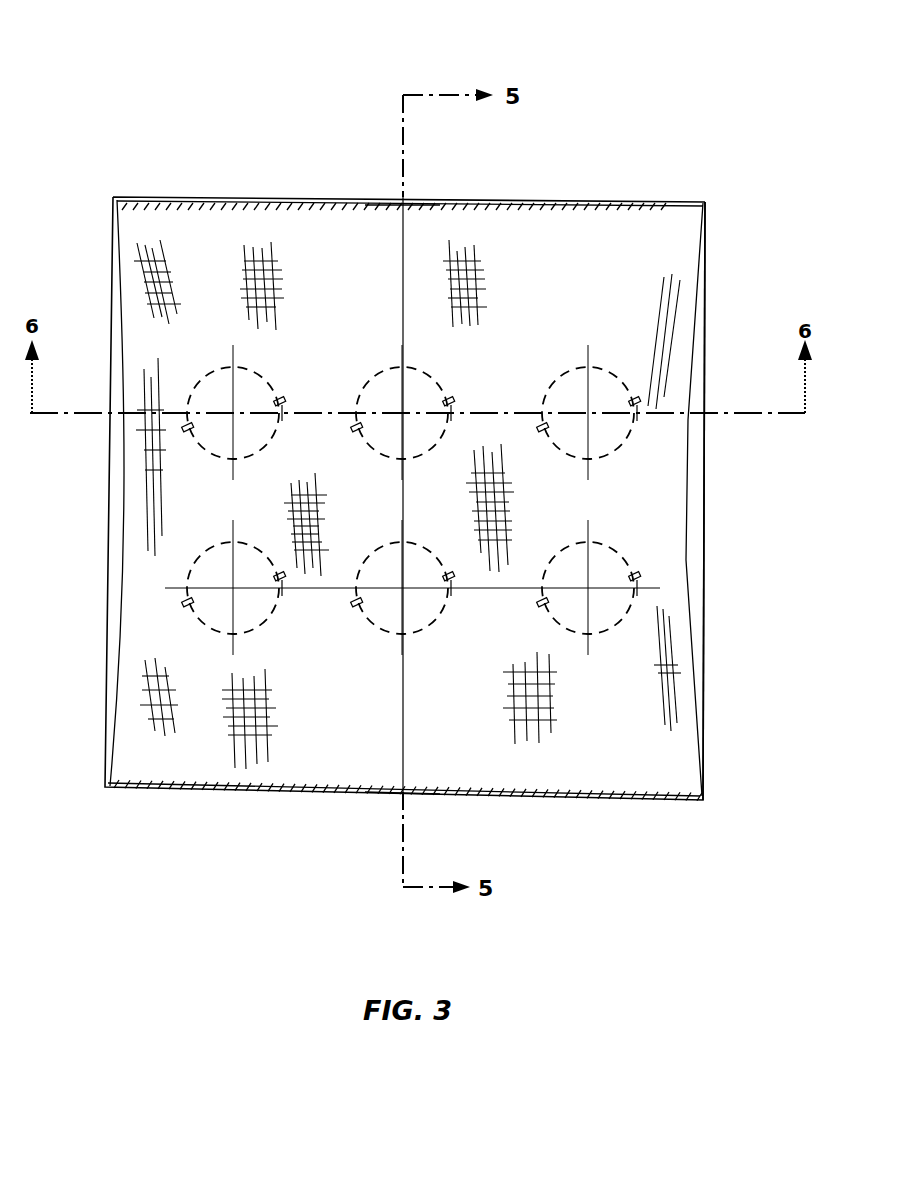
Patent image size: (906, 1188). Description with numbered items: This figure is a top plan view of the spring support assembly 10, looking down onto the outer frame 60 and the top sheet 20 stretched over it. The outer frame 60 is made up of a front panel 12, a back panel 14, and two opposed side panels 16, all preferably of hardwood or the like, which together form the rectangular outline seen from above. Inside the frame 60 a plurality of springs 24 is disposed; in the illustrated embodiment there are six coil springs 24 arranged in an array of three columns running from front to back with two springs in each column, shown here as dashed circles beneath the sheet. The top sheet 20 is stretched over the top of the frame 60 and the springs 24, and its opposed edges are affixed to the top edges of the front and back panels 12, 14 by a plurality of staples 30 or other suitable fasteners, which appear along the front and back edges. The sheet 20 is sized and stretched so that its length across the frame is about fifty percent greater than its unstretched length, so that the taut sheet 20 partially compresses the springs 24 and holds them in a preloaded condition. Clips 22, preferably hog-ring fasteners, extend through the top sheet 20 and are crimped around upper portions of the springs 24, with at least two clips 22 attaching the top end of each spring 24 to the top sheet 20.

The spring support assembly 10 is at (638, 86).
The front panel 12 is at (485, 795).
The back panel 14 is at (500, 200).
The side panels 16 is at (118, 463).
The top sheet 20 is at (366, 315).
The clips 22 is at (635, 575).
The springs 24 is at (633, 338).
The staples 30 is at (398, 207).
The outer frame 60 is at (710, 722).